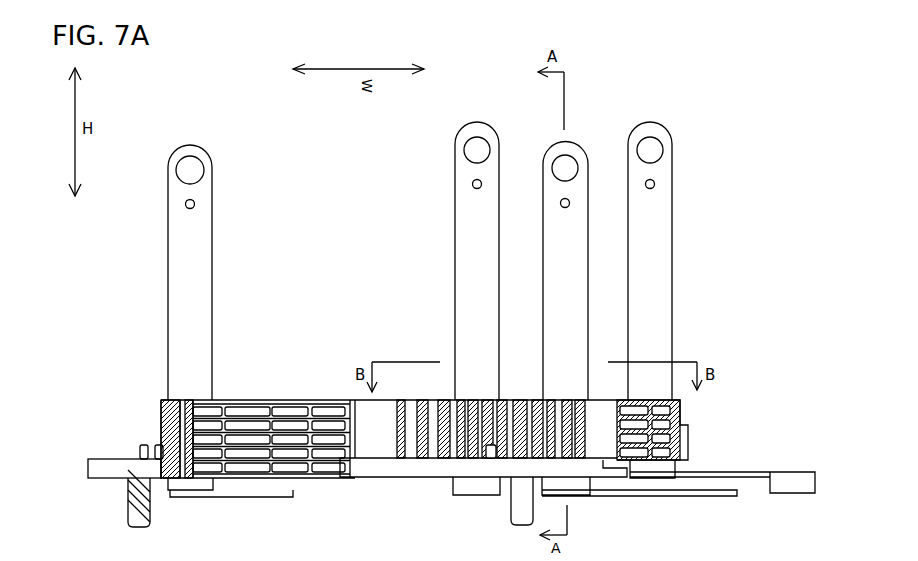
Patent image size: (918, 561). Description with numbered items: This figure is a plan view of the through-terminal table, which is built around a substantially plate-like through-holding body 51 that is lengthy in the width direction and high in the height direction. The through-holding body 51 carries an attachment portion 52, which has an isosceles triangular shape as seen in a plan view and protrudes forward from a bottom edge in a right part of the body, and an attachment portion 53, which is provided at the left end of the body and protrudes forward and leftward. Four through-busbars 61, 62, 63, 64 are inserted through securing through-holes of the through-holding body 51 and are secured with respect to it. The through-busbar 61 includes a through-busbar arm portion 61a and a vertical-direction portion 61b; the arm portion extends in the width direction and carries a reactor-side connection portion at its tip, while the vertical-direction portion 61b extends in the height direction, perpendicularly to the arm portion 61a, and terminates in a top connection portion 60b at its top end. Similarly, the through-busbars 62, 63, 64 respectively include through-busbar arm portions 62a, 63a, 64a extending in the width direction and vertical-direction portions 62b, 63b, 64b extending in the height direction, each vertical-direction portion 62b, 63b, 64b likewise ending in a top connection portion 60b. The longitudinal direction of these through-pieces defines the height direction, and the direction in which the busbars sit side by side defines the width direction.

The through-holding body 51 is at (685, 410).
The attachment portion 52 is at (470, 468).
The attachment portion 53 is at (118, 440).
The top connection portion 60b is at (190, 156).
The through-busbar 61 is at (175, 343).
The through-busbar arm portion 61a is at (238, 497).
The vertical-direction portion 61b is at (168, 272).
The through-busbar 62 is at (420, 333).
The through-busbar arm portion 62a is at (403, 492).
The vertical-direction portion 62b is at (455, 252).
The through-busbar 63 is at (542, 336).
The through-busbar arm portion 63a is at (615, 500).
The vertical-direction portion 63b is at (543, 238).
The through-busbar 64 is at (721, 307).
The through-busbar arm portion 64a is at (740, 470).
The vertical-direction portion 64b is at (672, 238).